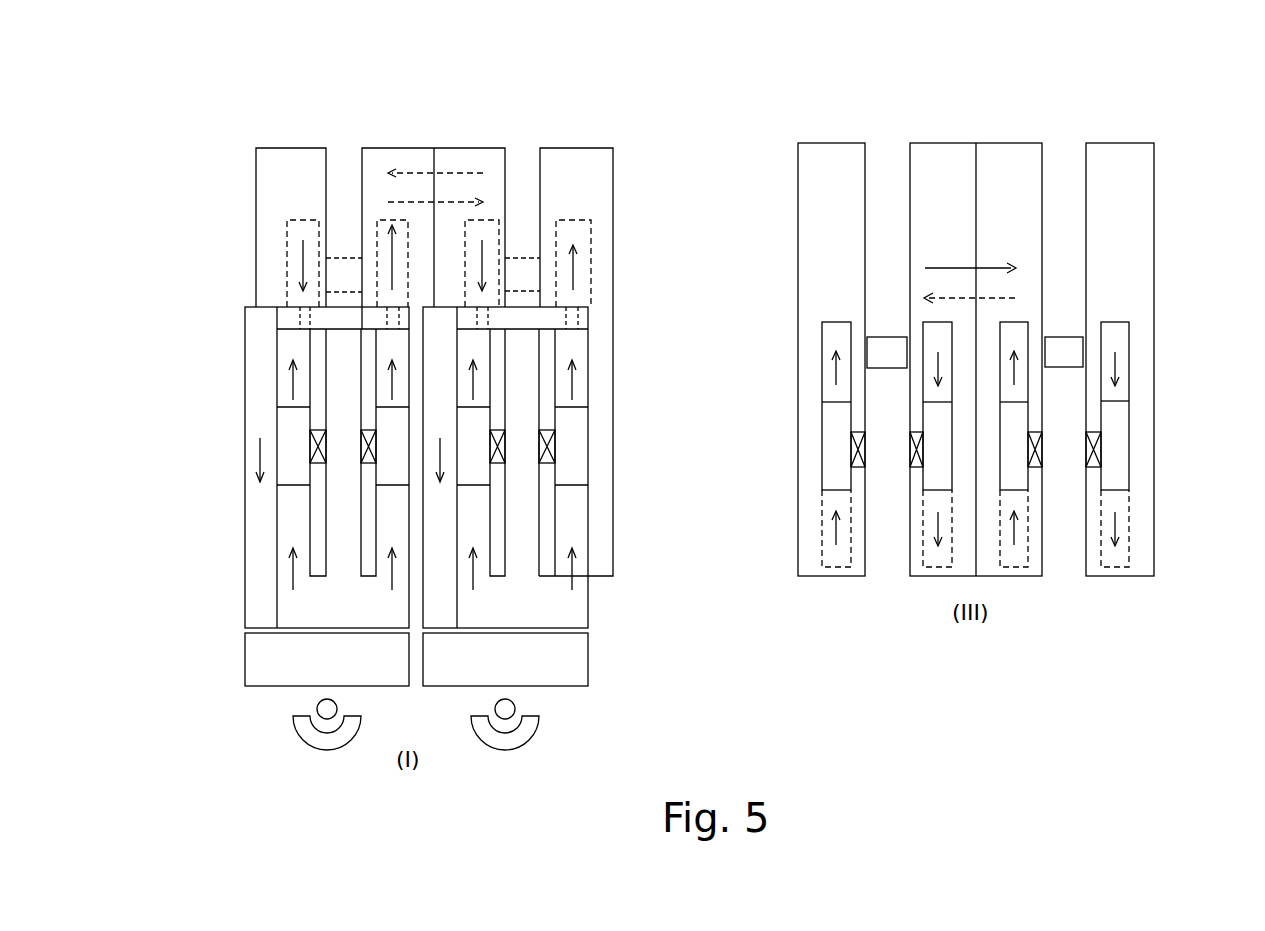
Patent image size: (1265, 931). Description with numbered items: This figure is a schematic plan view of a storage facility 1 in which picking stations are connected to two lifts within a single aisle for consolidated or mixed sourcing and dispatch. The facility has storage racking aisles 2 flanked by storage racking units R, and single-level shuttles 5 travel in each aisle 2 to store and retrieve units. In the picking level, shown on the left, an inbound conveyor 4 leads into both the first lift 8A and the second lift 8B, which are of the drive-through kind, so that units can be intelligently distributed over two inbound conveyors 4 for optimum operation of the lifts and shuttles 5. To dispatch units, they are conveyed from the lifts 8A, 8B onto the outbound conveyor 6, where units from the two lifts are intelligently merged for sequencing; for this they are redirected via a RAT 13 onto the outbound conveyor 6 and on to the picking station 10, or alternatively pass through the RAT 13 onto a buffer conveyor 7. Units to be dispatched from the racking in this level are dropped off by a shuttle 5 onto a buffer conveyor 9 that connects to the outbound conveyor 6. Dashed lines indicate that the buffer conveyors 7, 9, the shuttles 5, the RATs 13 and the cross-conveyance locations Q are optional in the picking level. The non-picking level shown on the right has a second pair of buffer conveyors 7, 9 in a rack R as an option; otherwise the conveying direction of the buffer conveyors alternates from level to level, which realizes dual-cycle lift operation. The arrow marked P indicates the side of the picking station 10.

The storage facility 1 is at (255, 103).
The storage racking aisle 2 is at (520, 153).
The inbound conveyor 4 is at (302, 604).
The shuttle 5 is at (704, 313).
The outbound conveyor 6 is at (258, 582).
The buffer conveyor 7 is at (387, 222).
The lift 8A is at (300, 425).
The lift 8B is at (385, 468).
The buffer conveyor 9 is at (297, 238).
The picking station 10 is at (575, 665).
The RAT 13 is at (297, 318).
The storage racking unit R is at (288, 160).
The cross-conveyance location Q is at (405, 173).
The heat source P is at (327, 764).